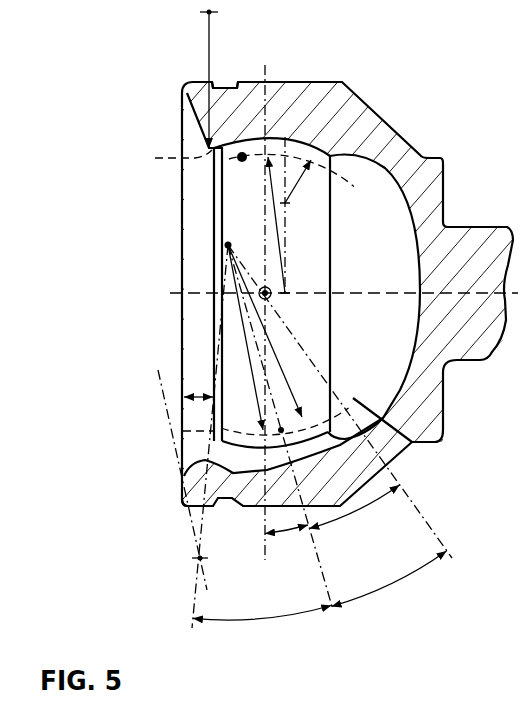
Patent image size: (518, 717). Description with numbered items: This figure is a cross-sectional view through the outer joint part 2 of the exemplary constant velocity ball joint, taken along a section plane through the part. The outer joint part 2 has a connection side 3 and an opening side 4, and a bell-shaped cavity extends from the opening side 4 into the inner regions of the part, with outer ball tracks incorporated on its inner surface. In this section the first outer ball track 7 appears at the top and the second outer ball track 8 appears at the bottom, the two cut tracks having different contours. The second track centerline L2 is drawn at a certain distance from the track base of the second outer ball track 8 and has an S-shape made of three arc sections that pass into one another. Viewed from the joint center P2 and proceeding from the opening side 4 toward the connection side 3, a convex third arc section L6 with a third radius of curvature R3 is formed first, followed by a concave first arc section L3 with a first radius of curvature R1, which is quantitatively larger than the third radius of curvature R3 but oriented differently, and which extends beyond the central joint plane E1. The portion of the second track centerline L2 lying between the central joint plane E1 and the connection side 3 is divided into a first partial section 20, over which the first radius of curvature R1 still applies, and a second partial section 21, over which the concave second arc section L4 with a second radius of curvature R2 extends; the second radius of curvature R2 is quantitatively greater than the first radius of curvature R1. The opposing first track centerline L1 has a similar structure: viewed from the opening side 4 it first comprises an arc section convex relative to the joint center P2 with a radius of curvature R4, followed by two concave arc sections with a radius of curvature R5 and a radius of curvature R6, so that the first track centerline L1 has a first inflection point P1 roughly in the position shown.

The outer joint part 2 is at (393, 130).
The connection side 3 is at (469, 220).
The opening side 4 is at (180, 127).
The first outer ball track 7 is at (320, 128).
The second outer ball track 8 is at (186, 462).
The first partial section 20 is at (289, 532).
The second partial section 21 is at (368, 508).
The first radius of curvature R1 is at (248, 365).
The second radius of curvature R2 is at (283, 377).
The third radius of curvature R3 is at (183, 503).
The radius of curvature R4 is at (209, 52).
The radius of curvature R5 is at (278, 233).
The radius of curvature R6 is at (298, 185).
The first inflection point P1 is at (242, 157).
The joint center P2 is at (272, 296).
The first track centerline L1 is at (200, 160).
The second track centerline L2 is at (418, 436).
The first arc section L3 is at (260, 620).
The second arc section L4 is at (396, 583).
The third arc section L6 is at (195, 392).
The central joint plane E1 is at (268, 70).